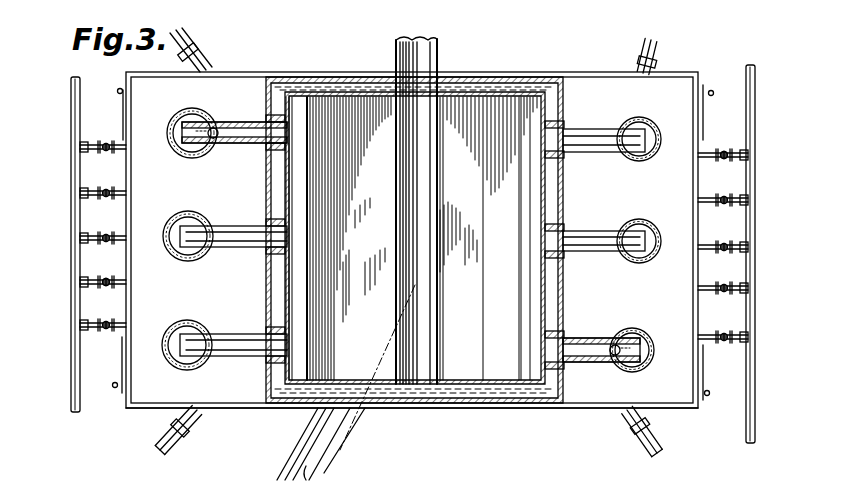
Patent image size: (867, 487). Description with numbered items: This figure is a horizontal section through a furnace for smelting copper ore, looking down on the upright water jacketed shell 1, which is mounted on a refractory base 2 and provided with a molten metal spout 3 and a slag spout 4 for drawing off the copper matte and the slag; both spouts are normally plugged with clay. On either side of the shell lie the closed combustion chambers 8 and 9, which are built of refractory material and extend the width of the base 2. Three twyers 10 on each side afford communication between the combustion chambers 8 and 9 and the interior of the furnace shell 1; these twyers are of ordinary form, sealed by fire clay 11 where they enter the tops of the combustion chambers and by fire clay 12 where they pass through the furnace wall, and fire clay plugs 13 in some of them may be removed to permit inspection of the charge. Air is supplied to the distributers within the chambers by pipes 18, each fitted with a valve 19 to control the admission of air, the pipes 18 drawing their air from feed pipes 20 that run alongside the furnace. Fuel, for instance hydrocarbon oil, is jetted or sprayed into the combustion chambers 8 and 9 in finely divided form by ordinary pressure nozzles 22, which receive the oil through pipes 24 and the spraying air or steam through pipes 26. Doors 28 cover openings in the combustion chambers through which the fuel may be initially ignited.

The water jacketed shell 1 is at (566, 92).
The refractory base 2 is at (573, 404).
The molten metal spout 3 is at (438, 62).
The slag spout 4 is at (438, 34).
The combustion chamber 8 is at (150, 306).
The combustion chamber 9 is at (628, 240).
The twyer 10 is at (246, 144).
The fire clay 11 is at (174, 154).
The fire clay 12 is at (268, 118).
The fire clay plug 13 is at (168, 126).
The pipe 18 is at (90, 328).
The valve 19 is at (104, 284).
The feed pipe 20 is at (70, 236).
The jetting or spraying nozzle 22 is at (660, 64).
The pipe 24 is at (172, 448).
The pipe 26 is at (158, 446).
The door 28 is at (120, 122).